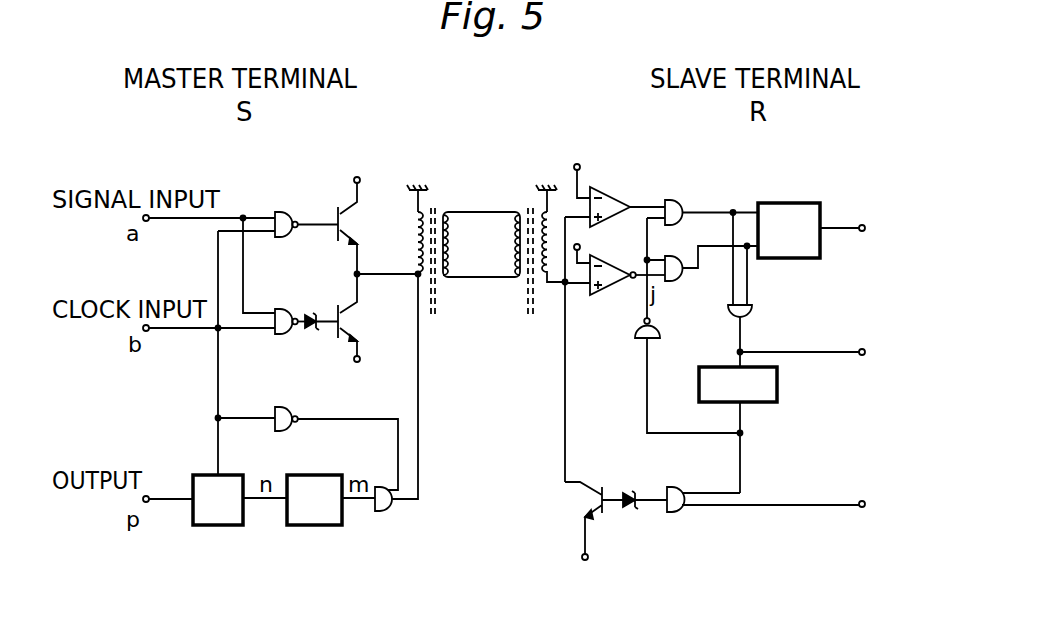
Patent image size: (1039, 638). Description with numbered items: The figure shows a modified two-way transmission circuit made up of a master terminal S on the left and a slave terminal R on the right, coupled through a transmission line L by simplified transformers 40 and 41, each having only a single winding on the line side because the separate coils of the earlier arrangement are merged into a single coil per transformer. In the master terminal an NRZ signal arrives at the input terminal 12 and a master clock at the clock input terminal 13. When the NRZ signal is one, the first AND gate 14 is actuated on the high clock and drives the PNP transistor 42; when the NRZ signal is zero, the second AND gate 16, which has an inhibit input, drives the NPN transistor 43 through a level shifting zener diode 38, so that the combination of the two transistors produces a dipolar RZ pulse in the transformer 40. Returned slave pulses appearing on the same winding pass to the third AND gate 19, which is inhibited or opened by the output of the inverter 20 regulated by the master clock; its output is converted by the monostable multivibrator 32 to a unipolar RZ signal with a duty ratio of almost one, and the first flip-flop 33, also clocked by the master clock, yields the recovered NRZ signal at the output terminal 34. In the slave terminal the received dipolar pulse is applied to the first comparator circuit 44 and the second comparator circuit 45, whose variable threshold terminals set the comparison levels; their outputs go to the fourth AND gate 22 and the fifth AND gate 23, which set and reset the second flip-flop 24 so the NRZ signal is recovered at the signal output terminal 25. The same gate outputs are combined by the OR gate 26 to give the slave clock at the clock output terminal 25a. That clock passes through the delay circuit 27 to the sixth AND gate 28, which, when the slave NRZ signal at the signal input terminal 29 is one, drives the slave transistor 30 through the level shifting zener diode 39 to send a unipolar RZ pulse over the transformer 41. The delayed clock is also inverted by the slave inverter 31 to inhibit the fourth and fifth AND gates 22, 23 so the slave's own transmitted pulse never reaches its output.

The input terminal 12 is at (150, 222).
The clock input terminal 13 is at (150, 332).
The AND gate A1 14 is at (286, 237).
The AND gate A2 16 is at (284, 334).
The AND gate A3 19 is at (383, 511).
The inverter INV 20 is at (286, 431).
The AND gate A4 22 is at (681, 205).
The AND gate A5 23 is at (680, 260).
The flip-flop circuit FF2 24 is at (800, 258).
The signal output terminal 25 is at (864, 231).
The output terminal 25a is at (864, 355).
The OR gate 26 is at (744, 318).
The delay circuit DL 27 is at (777, 395).
The AND gate A6 28 is at (680, 488).
The signal input terminal 29 is at (864, 507).
The transistor TS3 30 is at (595, 513).
The inverter INV' 31 is at (660, 330).
The monostable multivibrator MM 32 is at (322, 525).
The flip-flop circuit FF1 33 is at (220, 525).
The output terminal 34 is at (150, 503).
The zener diode Z2 38 is at (312, 330).
The zener diode Z3 39 is at (631, 509).
The transformer 40 is at (429, 350).
The transformer 41 is at (521, 352).
The PNP transistor TS1 42 is at (358, 247).
The NPN transistor TS2 43 is at (345, 300).
The comparator circuit C1 44 is at (620, 198).
The comparator circuit C2 45 is at (615, 270).